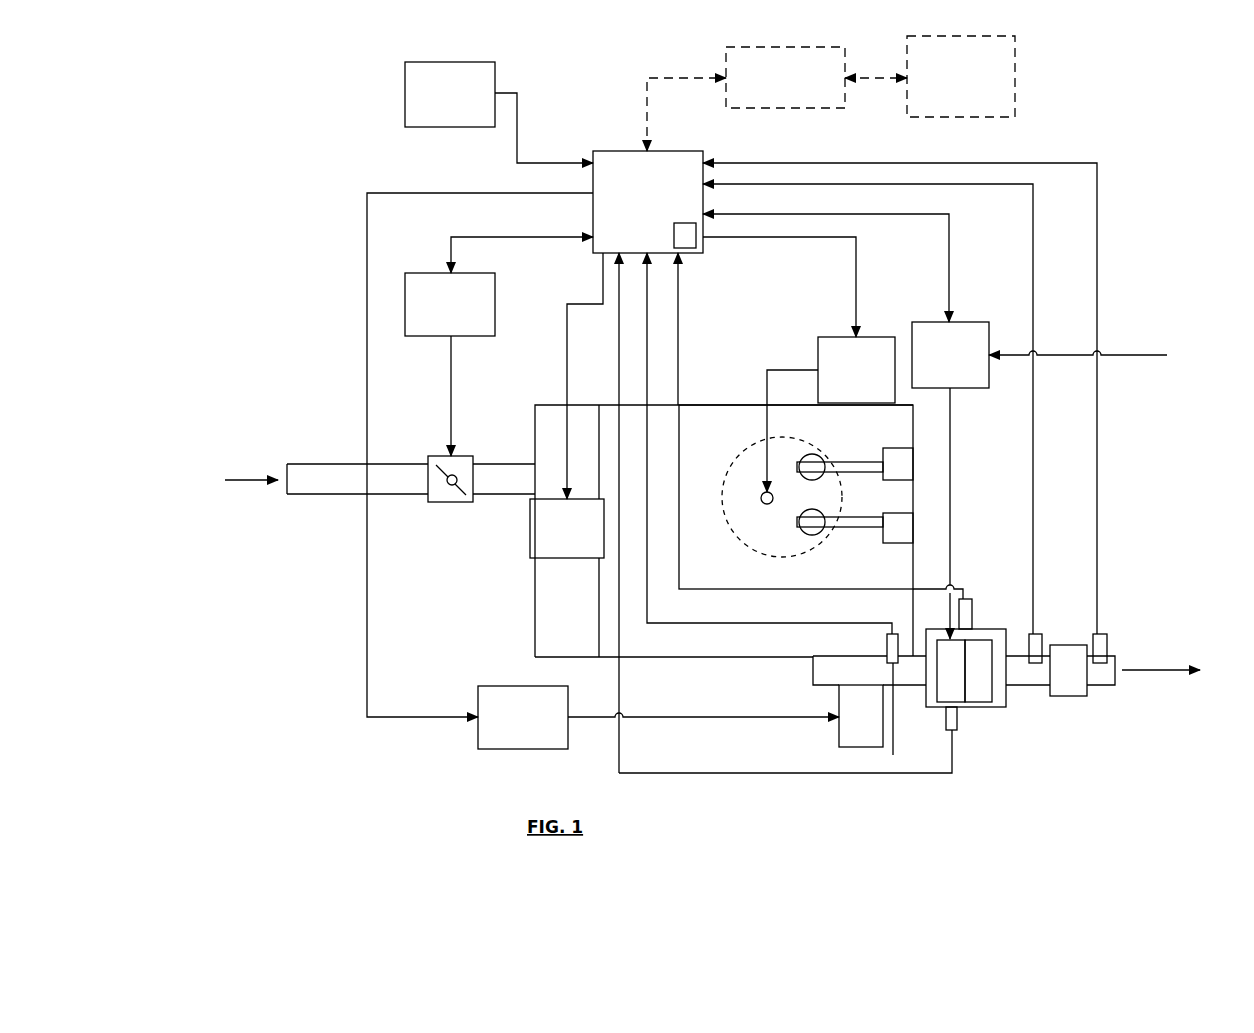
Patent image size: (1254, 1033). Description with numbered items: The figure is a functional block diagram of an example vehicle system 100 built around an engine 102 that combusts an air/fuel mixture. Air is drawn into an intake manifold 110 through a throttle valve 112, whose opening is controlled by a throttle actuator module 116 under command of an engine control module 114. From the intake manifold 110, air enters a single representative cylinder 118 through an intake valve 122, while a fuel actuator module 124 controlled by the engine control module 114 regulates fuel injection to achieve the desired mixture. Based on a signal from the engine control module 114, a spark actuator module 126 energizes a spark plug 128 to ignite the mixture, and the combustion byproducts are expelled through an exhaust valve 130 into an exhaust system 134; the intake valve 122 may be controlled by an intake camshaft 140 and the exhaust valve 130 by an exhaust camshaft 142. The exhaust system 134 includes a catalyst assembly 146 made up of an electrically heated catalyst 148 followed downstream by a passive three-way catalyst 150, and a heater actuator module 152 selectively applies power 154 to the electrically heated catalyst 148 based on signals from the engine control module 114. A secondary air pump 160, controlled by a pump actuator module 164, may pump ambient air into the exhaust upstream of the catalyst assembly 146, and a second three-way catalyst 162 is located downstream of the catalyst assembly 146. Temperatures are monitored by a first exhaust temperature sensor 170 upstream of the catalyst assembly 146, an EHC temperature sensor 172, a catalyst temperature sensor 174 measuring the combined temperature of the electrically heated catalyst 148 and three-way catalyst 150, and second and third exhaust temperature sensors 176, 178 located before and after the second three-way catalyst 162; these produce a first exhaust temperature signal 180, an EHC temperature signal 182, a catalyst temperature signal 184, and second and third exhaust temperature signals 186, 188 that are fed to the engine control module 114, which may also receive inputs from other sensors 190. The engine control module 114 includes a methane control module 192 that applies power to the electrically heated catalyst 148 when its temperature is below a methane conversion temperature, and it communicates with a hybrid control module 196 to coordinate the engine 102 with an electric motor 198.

The vehicle system 100 is at (248, 92).
The engine 102 is at (703, 405).
The intake manifold 110 is at (535, 610).
The throttle valve 112 is at (452, 502).
The engine control module 114 is at (700, 151).
The throttle actuator module 116 is at (428, 273).
The cylinder 118 is at (745, 542).
The intake valve 122 is at (810, 454).
The fuel actuator module 124 is at (590, 558).
The spark actuator module 126 is at (876, 337).
The spark plug 128 is at (762, 502).
The exhaust valve 130 is at (812, 536).
The exhaust system 134 is at (765, 782).
The intake camshaft 140 is at (862, 462).
The exhaust camshaft 142 is at (866, 527).
The catalyst assembly 146 is at (1006, 697).
The electrically heated catalyst 148 is at (938, 697).
The three-way catalyst 150 is at (978, 702).
The heater actuator module 152 is at (974, 322).
The power 154 is at (1140, 355).
The secondary air pump 160 is at (839, 698).
The second three-way catalyst 162 is at (1068, 696).
The pump actuator module 164 is at (525, 749).
The first exhaust temperature sensor 170 is at (894, 738).
The EHC temperature sensor 172 is at (958, 730).
The catalyst temperature sensor 174 is at (972, 615).
The second exhaust temperature sensor 176 is at (1042, 638).
The third exhaust temperature sensor 178 is at (1106, 638).
The first exhaust temperature signal 180 is at (714, 625).
The EHC temperature signal 182 is at (956, 773).
The catalyst temperature signal 184 is at (954, 584).
The second exhaust temperature signal 186 is at (1034, 600).
The third exhaust temperature signal 188 is at (1098, 600).
The other sensors 190 is at (405, 91).
The methane control module 192 is at (696, 246).
The hybrid control module 196 is at (782, 108).
The electric motor 198 is at (972, 117).